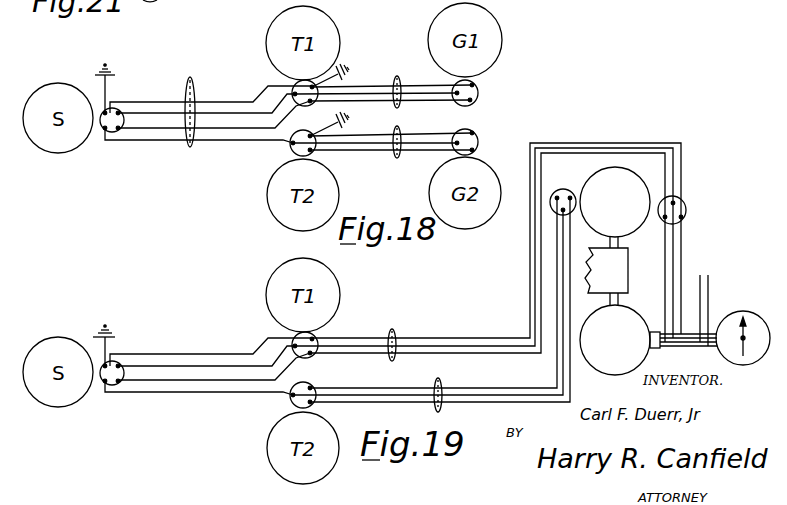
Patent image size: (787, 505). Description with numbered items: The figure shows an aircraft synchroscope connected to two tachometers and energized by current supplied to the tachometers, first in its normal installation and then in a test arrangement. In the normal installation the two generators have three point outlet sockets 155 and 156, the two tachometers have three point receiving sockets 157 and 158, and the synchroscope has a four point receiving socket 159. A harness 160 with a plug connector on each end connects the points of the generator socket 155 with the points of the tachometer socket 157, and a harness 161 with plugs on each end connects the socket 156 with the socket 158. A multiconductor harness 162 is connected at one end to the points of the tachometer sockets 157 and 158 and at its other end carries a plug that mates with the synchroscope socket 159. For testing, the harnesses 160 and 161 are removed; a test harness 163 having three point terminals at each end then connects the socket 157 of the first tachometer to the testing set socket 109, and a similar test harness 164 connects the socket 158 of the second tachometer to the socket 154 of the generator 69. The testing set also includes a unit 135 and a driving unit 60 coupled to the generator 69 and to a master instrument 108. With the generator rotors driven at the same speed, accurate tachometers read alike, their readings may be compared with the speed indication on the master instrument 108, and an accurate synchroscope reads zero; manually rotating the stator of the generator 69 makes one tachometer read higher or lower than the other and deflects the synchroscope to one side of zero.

In FIG. 19, the socket of the generator 154 is at (563, 193).
In FIG. 18, the three point outlet socket 155 is at (478, 91).
In FIG. 18, the three point outlet socket 156 is at (478, 135).
In FIG. 18, the three point receiving socket 157 is at (292, 86).
In FIG. 19, the three point receiving socket 157 is at (292, 338).
In FIG. 18, the three point receiving socket 158 is at (292, 148).
In FIG. 19, the three point receiving socket 158 is at (291, 400).
In FIG. 18, the four point receiving socket 159 is at (111, 133).
In FIG. 19, the four point receiving socket 159 is at (111, 386).
In FIG. 18, the harness 160 is at (397, 76).
In FIG. 18, the harness 161 is at (397, 159).
In FIG. 18, the multiconductor harness 162 is at (192, 75).
In FIG. 19, the test harness 163 is at (392, 330).
In FIG. 19, the test harness 164 is at (439, 379).
In FIG. 19, the generator 69 is at (634, 181).
In FIG. 19, the testing set socket 109 is at (687, 209).
In FIG. 19, the amplifier 135 is at (606, 271).
In FIG. 19, the motor 60 is at (633, 313).
In FIG. 19, the master instrument 108 is at (715, 320).